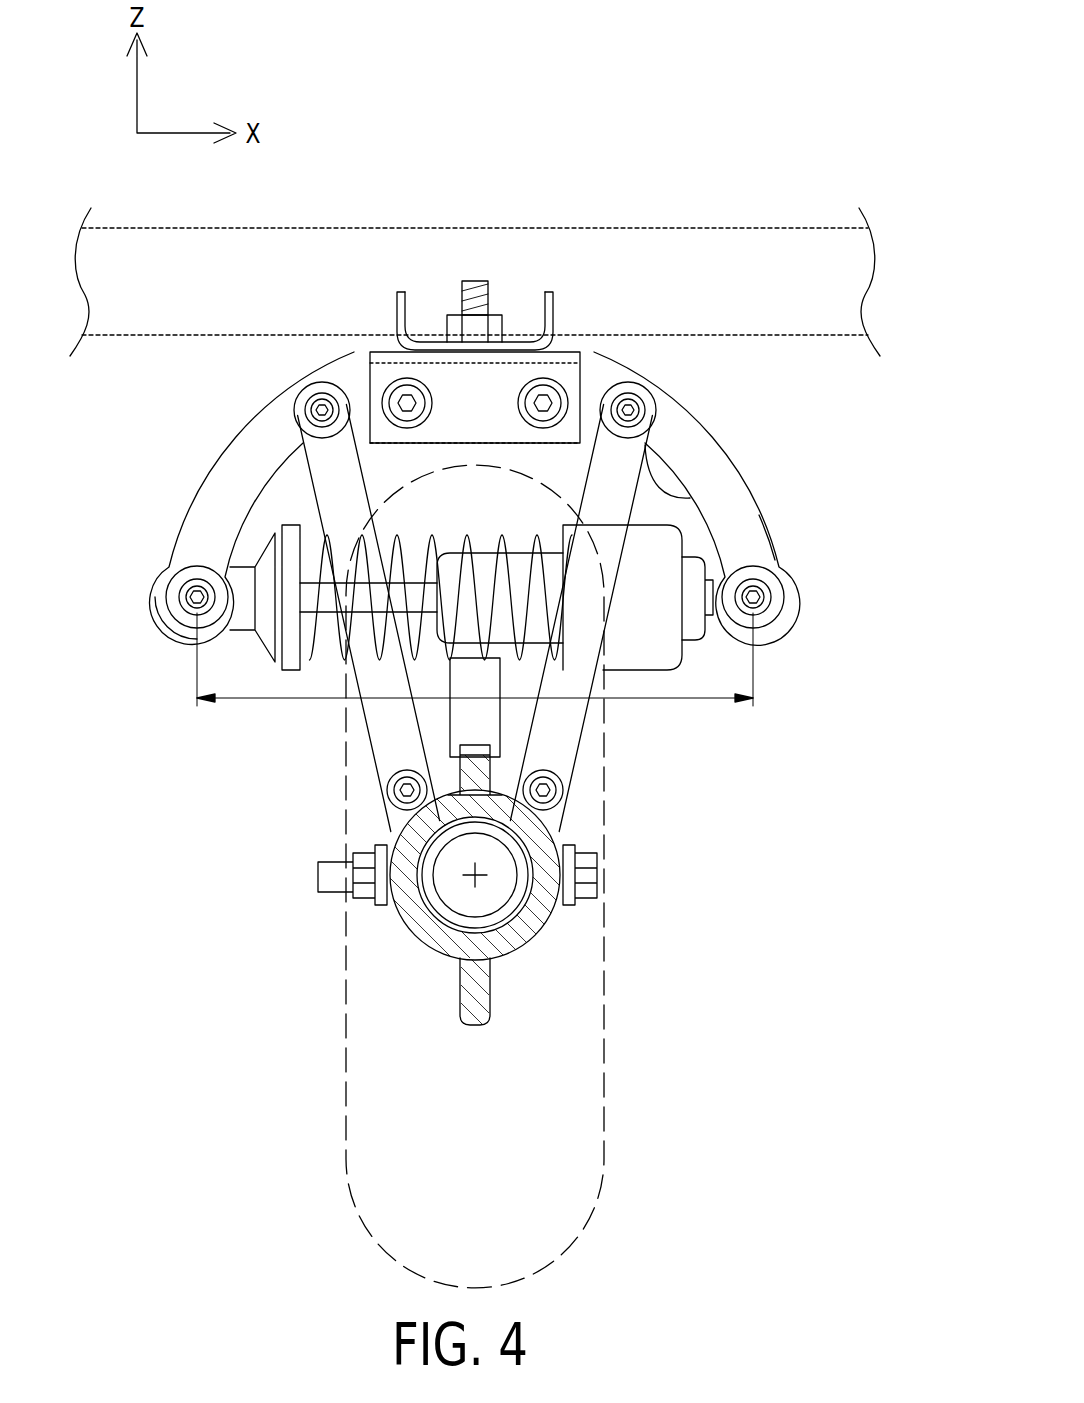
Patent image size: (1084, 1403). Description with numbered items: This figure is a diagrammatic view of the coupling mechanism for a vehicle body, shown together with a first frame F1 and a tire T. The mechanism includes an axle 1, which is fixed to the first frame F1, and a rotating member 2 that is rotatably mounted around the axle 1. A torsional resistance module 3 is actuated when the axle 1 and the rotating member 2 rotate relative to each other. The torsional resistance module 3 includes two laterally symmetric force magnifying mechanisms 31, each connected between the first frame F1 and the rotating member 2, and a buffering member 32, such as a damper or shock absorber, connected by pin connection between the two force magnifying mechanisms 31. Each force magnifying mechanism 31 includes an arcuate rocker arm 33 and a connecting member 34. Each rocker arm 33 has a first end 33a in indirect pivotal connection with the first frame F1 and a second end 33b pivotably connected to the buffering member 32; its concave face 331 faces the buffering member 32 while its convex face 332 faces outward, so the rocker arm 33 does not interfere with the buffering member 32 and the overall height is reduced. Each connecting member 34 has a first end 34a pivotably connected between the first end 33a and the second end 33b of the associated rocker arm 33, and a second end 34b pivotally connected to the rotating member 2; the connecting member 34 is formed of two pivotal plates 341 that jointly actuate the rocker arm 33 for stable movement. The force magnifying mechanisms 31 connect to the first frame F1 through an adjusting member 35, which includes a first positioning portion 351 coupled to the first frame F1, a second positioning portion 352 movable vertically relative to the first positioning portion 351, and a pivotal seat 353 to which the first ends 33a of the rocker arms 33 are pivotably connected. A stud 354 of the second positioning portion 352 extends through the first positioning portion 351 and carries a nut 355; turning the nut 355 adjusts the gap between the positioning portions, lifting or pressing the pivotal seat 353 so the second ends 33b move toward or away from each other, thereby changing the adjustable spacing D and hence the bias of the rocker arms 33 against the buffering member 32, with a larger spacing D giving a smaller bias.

The axle 1 is at (487, 893).
The rotating member 2 is at (537, 918).
The torsional resistance module 3 is at (145, 650).
The force magnifying mechanism 31 is at (200, 450).
The buffering member 32 is at (660, 560).
The rocker arm 33 is at (485, 380).
The first end 33a is at (360, 383).
The second end 33b is at (175, 580).
The concave face 331 is at (673, 490).
The convex face 332 is at (745, 503).
The connecting member 34 is at (520, 500).
The pivotal plate 341 is at (382, 717).
The first end 34a is at (315, 437).
The second end 34b is at (372, 785).
The adjusting member 35 is at (348, 138).
The first positioning portion 351 is at (435, 337).
The second positioning portion 352 is at (556, 308).
The pivotal seat 353 is at (497, 373).
The stud 354 is at (475, 282).
The nut 355 is at (448, 313).
The adjustable spacing D is at (475, 659).
The first frame F1 is at (740, 243).
The tire T is at (577, 1167).